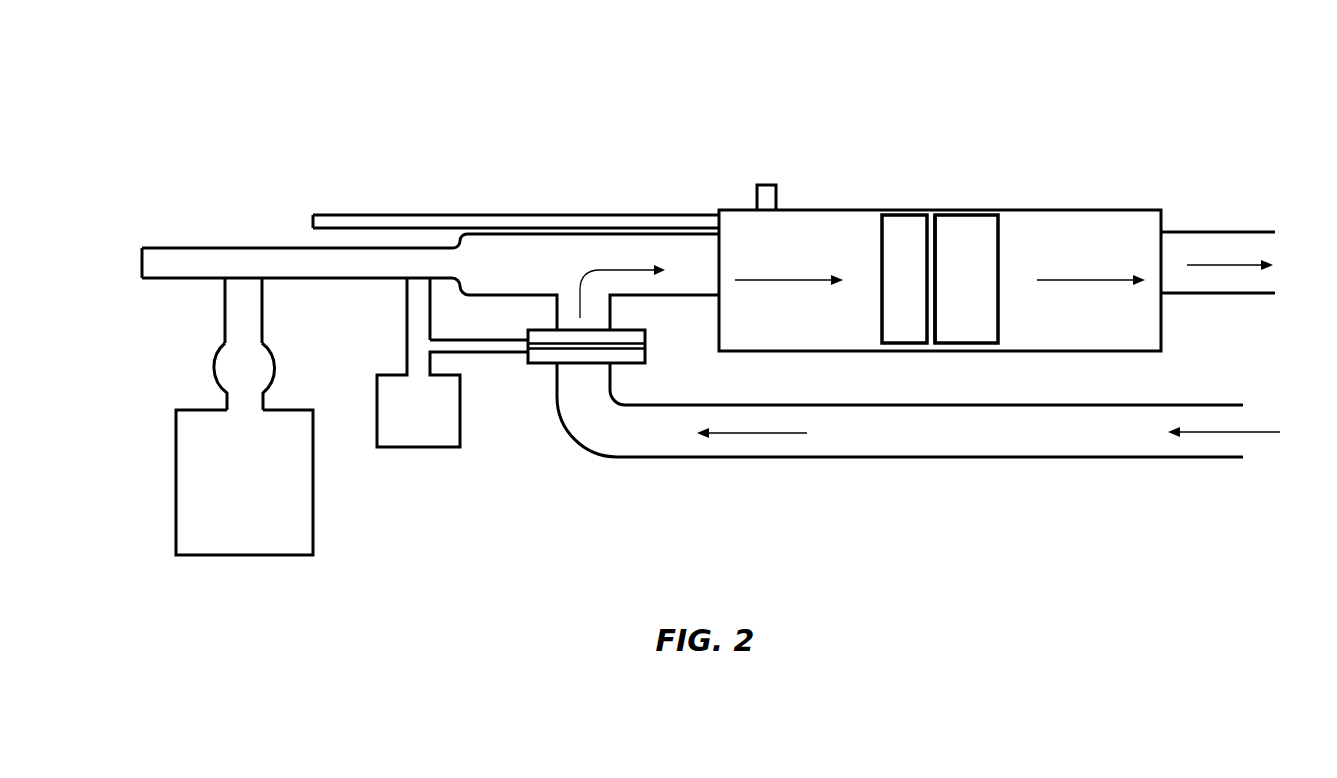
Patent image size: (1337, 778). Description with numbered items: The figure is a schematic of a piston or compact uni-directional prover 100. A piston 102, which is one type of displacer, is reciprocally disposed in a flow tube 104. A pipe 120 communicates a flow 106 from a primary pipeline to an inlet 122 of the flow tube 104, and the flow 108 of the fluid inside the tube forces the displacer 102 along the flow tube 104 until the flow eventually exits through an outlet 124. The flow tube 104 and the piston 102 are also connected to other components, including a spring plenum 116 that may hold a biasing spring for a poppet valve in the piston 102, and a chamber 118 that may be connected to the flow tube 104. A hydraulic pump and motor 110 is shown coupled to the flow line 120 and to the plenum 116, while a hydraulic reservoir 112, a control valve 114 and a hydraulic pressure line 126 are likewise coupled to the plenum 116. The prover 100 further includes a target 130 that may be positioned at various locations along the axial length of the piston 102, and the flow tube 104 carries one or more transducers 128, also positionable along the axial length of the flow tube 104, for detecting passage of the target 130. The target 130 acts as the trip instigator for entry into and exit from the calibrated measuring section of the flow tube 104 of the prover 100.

The prover 100 is at (763, 74).
The piston 102 is at (908, 222).
The flow tube 104 is at (1038, 208).
The flow 106 is at (1240, 432).
The flow 108 is at (818, 278).
The hydraulic pump and motor 110 is at (390, 402).
The hydraulic reservoir 112 is at (192, 452).
The control valve 114 is at (222, 370).
The spring plenum 116 is at (182, 247).
The chamber 118 is at (333, 213).
The pipe 120 is at (930, 457).
The inlet 122 is at (680, 296).
The outlet 124 is at (1240, 232).
The hydraulic pressure line 126 is at (237, 320).
The transducer 128 is at (762, 183).
The target 130 is at (935, 276).